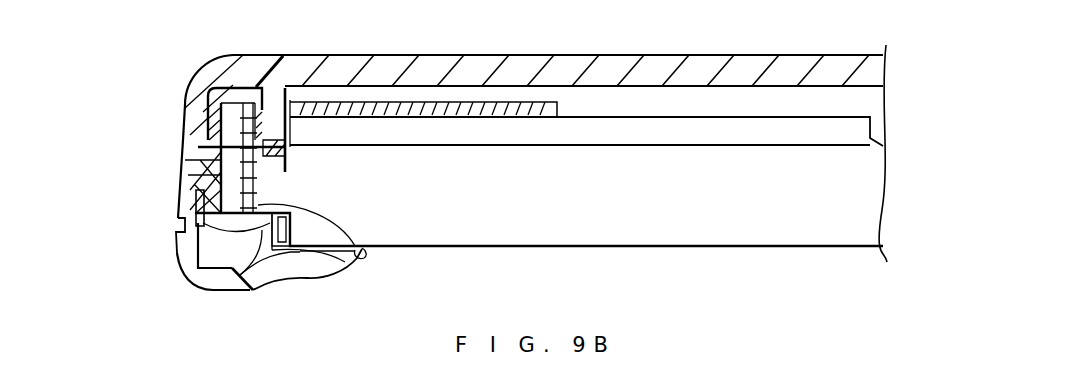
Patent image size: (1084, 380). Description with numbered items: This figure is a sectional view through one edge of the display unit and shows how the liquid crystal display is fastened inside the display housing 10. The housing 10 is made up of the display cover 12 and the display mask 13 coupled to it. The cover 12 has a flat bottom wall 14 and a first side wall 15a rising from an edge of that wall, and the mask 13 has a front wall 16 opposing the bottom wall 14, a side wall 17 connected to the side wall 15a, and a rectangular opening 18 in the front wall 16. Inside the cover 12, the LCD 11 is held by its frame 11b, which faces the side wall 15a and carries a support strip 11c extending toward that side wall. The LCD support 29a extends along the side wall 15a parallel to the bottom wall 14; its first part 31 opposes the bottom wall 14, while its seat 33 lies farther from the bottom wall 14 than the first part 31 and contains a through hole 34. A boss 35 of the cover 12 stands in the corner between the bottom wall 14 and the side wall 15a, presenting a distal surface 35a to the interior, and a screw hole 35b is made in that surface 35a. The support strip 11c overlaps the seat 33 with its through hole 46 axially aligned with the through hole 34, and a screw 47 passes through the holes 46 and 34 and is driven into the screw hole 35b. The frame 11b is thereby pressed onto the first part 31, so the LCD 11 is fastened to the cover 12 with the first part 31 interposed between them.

The display housing 10 is at (712, 56).
The liquid crystal display (LCD) 11 is at (704, 248).
The frame 11b is at (264, 66).
The support strip 11c is at (318, 265).
The display cover 12 is at (207, 75).
The display mask 13 is at (193, 281).
The bottom wall 14 is at (445, 68).
The first side wall 15a is at (207, 117).
The front wall 16 is at (303, 279).
The side wall 17 is at (173, 243).
The rectangular opening 18 is at (364, 251).
The LCD support 29a is at (392, 108).
The first part 31 is at (330, 101).
The seat 33 is at (203, 160).
The through hole 34 is at (177, 193).
The boss 35 is at (292, 143).
The distal surface 35a is at (210, 147).
The screw hole 35b is at (213, 128).
The through hole 46 is at (182, 262).
The screw 47 is at (247, 228).